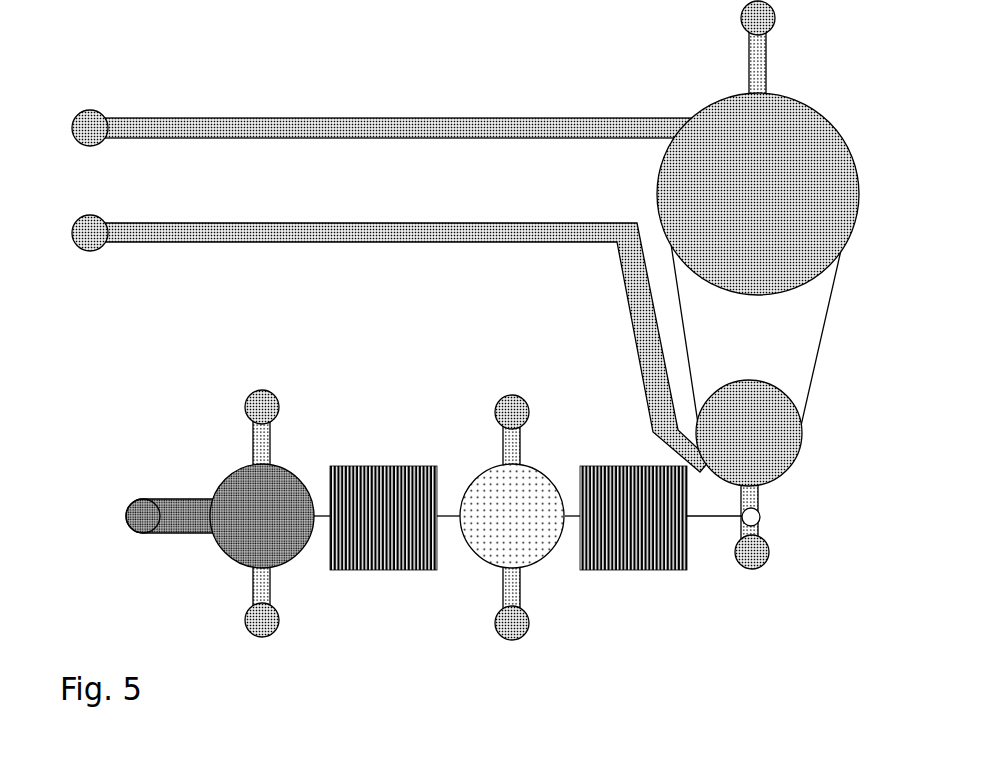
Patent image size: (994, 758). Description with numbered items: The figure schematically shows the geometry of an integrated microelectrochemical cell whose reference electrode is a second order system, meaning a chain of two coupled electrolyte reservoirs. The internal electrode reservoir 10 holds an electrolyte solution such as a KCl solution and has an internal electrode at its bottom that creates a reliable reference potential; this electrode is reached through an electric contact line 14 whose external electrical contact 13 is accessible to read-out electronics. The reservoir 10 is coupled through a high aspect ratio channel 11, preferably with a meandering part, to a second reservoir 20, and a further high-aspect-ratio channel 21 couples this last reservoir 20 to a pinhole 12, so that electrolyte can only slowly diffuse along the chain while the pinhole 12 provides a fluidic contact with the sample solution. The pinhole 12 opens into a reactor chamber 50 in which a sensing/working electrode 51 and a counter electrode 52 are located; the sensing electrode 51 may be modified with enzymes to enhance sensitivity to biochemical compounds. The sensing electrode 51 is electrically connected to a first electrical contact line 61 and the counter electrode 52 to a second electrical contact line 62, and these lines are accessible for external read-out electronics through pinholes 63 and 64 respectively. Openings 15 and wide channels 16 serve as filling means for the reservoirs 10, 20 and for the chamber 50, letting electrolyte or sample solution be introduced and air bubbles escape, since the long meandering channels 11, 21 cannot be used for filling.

The internal electrode reservoir 10 is at (262, 516).
The high aspect ratio channel 11 is at (377, 462).
The pinhole 12 is at (761, 519).
The electrical contact 13 is at (145, 504).
The electric contact line 14 is at (185, 505).
The openings 15 is at (748, 17).
The wide channels 16 is at (767, 70).
The reservoir 20 is at (512, 516).
The high-aspect-ratio channel 21 is at (636, 464).
The reactor chamber 50 is at (759, 297).
The sensing/working electrode 51 is at (758, 194).
The counter electrode 52 is at (749, 433).
The first electrical contact line 61 is at (152, 124).
The second electrical contact line 62 is at (206, 226).
The pinhole 63 is at (91, 144).
The pinhole 64 is at (85, 248).